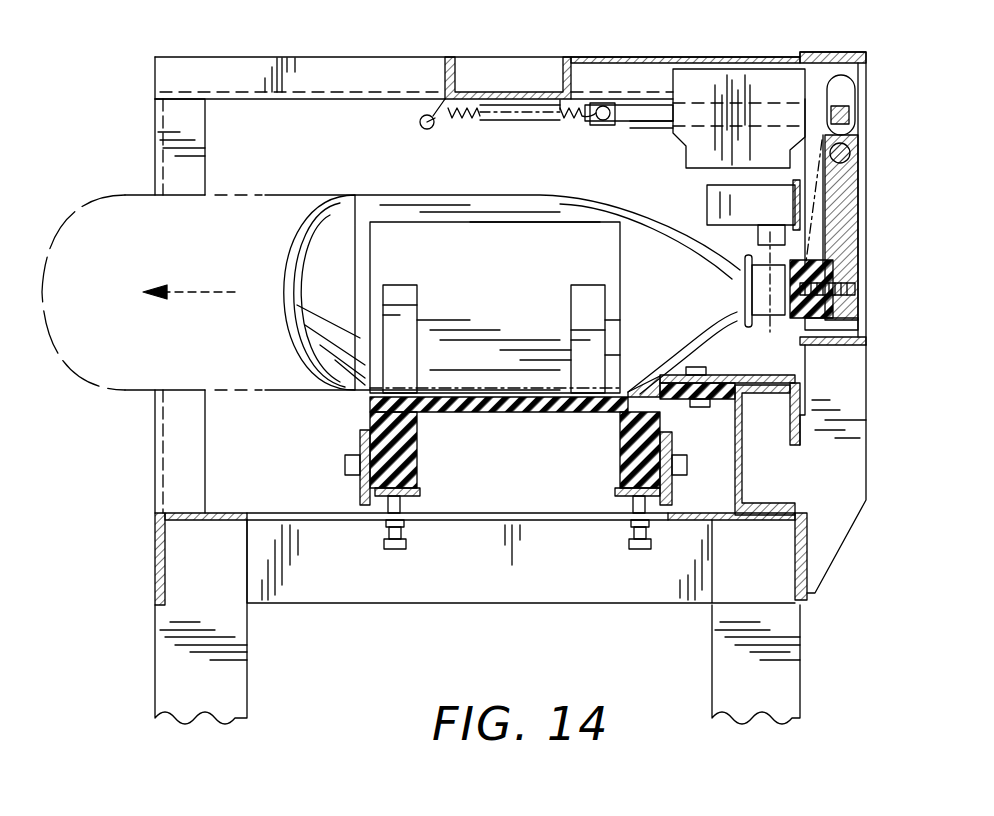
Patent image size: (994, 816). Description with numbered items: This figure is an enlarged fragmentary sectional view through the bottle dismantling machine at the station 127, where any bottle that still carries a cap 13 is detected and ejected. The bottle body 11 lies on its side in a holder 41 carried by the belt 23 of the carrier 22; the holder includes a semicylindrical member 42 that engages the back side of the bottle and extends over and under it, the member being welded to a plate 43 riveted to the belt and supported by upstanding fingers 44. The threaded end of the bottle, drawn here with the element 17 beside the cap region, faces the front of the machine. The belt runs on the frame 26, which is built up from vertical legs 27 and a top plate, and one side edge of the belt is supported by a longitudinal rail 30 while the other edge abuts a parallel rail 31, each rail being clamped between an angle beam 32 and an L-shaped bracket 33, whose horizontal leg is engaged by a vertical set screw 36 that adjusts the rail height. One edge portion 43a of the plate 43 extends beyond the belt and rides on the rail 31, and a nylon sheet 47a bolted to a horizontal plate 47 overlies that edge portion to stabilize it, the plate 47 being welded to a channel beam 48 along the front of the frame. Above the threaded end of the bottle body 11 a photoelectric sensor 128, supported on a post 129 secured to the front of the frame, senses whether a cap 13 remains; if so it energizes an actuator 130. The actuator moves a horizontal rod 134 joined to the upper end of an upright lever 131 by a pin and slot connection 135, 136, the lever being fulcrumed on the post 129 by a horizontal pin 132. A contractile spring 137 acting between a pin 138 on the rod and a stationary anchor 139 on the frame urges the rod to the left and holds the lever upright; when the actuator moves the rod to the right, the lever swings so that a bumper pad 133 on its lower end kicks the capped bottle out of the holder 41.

The bottle body 11 is at (102, 200).
The cap 13 is at (790, 330).
The bottle cap 17 is at (745, 285).
The carrier 22 is at (352, 405).
The belt 23 is at (495, 415).
The frame 26 is at (812, 648).
The vertical legs 27 is at (247, 645).
The longitudinal rail 30 is at (410, 427).
The parallel rail 31 is at (618, 428).
The angle beam 32 is at (360, 450).
The L-shaped bracket 33 is at (420, 492).
The set screw 36 is at (406, 540).
The holder 41 is at (356, 248).
The semicylindrical member 42 is at (520, 279).
The plate 43 is at (512, 397).
The edge portion 43a is at (665, 424).
The fingers 44 is at (572, 312).
The horizontal plate 47 is at (735, 386).
The nylon sheet 47a is at (645, 382).
The channel beam 48 is at (742, 485).
The station 127 is at (888, 345).
The photoelectric sensor 128 is at (722, 210).
The post 129 is at (845, 435).
The actuator 130 is at (710, 80).
The upright lever 131 is at (848, 205).
The horizontal pin 132 is at (850, 158).
The bumper pad 133 is at (846, 330).
The horizontal rod 134 is at (628, 110).
The pin 135 is at (849, 118).
The slot 136 is at (850, 95).
The contractile spring 137 is at (530, 125).
The pin 138 is at (603, 125).
The stationary anchor 139 is at (432, 115).